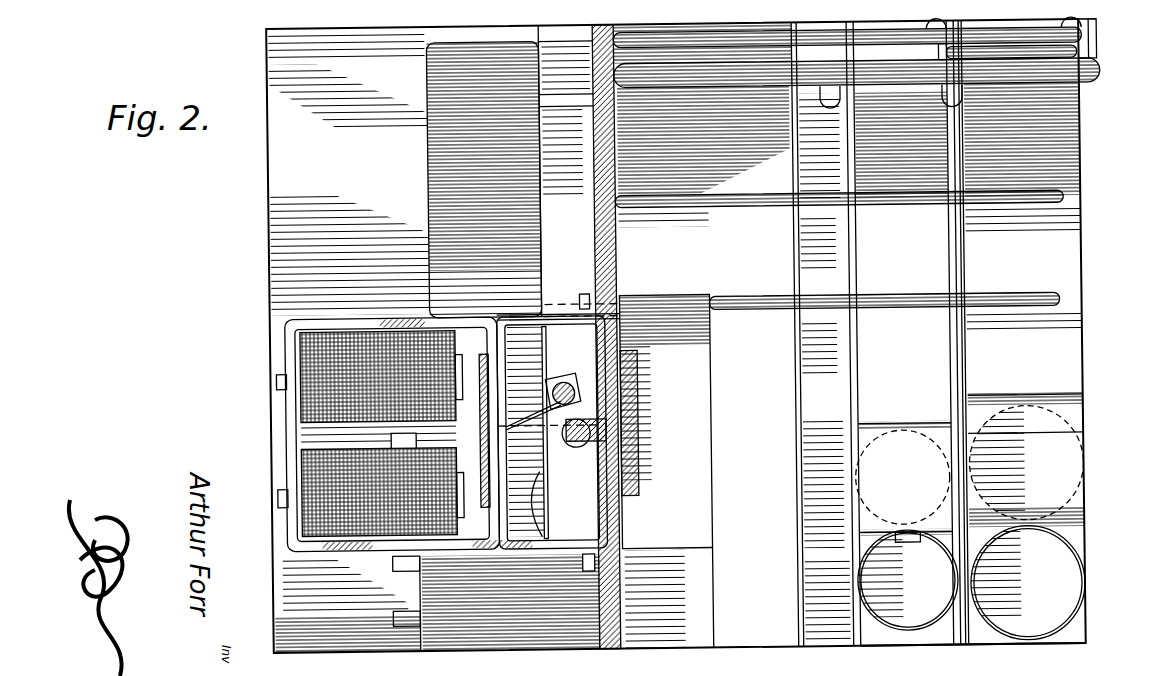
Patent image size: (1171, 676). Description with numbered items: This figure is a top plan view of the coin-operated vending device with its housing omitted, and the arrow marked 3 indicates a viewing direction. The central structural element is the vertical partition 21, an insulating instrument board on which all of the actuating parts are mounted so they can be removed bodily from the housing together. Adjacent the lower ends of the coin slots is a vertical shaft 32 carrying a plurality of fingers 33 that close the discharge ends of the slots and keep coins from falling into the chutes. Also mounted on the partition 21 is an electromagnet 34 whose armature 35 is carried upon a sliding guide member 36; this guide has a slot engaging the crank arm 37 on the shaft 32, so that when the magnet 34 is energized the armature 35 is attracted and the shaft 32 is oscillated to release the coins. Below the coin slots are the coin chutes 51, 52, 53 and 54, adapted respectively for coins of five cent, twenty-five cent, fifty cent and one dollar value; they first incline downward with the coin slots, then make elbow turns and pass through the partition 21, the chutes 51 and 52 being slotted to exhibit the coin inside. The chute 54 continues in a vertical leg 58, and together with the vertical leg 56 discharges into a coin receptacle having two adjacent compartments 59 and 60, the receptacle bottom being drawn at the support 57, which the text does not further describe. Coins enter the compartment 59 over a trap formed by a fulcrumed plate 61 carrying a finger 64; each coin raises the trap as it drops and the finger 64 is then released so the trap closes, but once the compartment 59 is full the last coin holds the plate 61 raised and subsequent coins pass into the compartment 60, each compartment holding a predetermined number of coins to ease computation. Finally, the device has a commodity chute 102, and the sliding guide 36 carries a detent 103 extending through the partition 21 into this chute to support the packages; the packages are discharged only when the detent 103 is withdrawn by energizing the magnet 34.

The section line 3 is at (238, 352).
The vertical partition 21 is at (618, 245).
The vertical shaft 32 is at (565, 383).
The fingers 33 is at (539, 413).
The electromagnet 34 is at (339, 458).
The armature 35 is at (474, 430).
The sliding guide member 36 is at (538, 468).
The crank arm 37 is at (587, 429).
The coin chute 51 is at (906, 309).
The coin chute 52 is at (765, 205).
The coin chute 53 is at (755, 96).
The coin chute 54 is at (453, 284).
The vertical leg 56 is at (861, 400).
The roller support 57 is at (927, 618).
The vertical leg 58 is at (1083, 257).
The compartment 59 is at (909, 603).
The compartment 60 is at (870, 472).
The plate 61 is at (1068, 475).
The finger 64 is at (908, 548).
The commodity chute 102 is at (696, 412).
The detent 103 is at (636, 410).